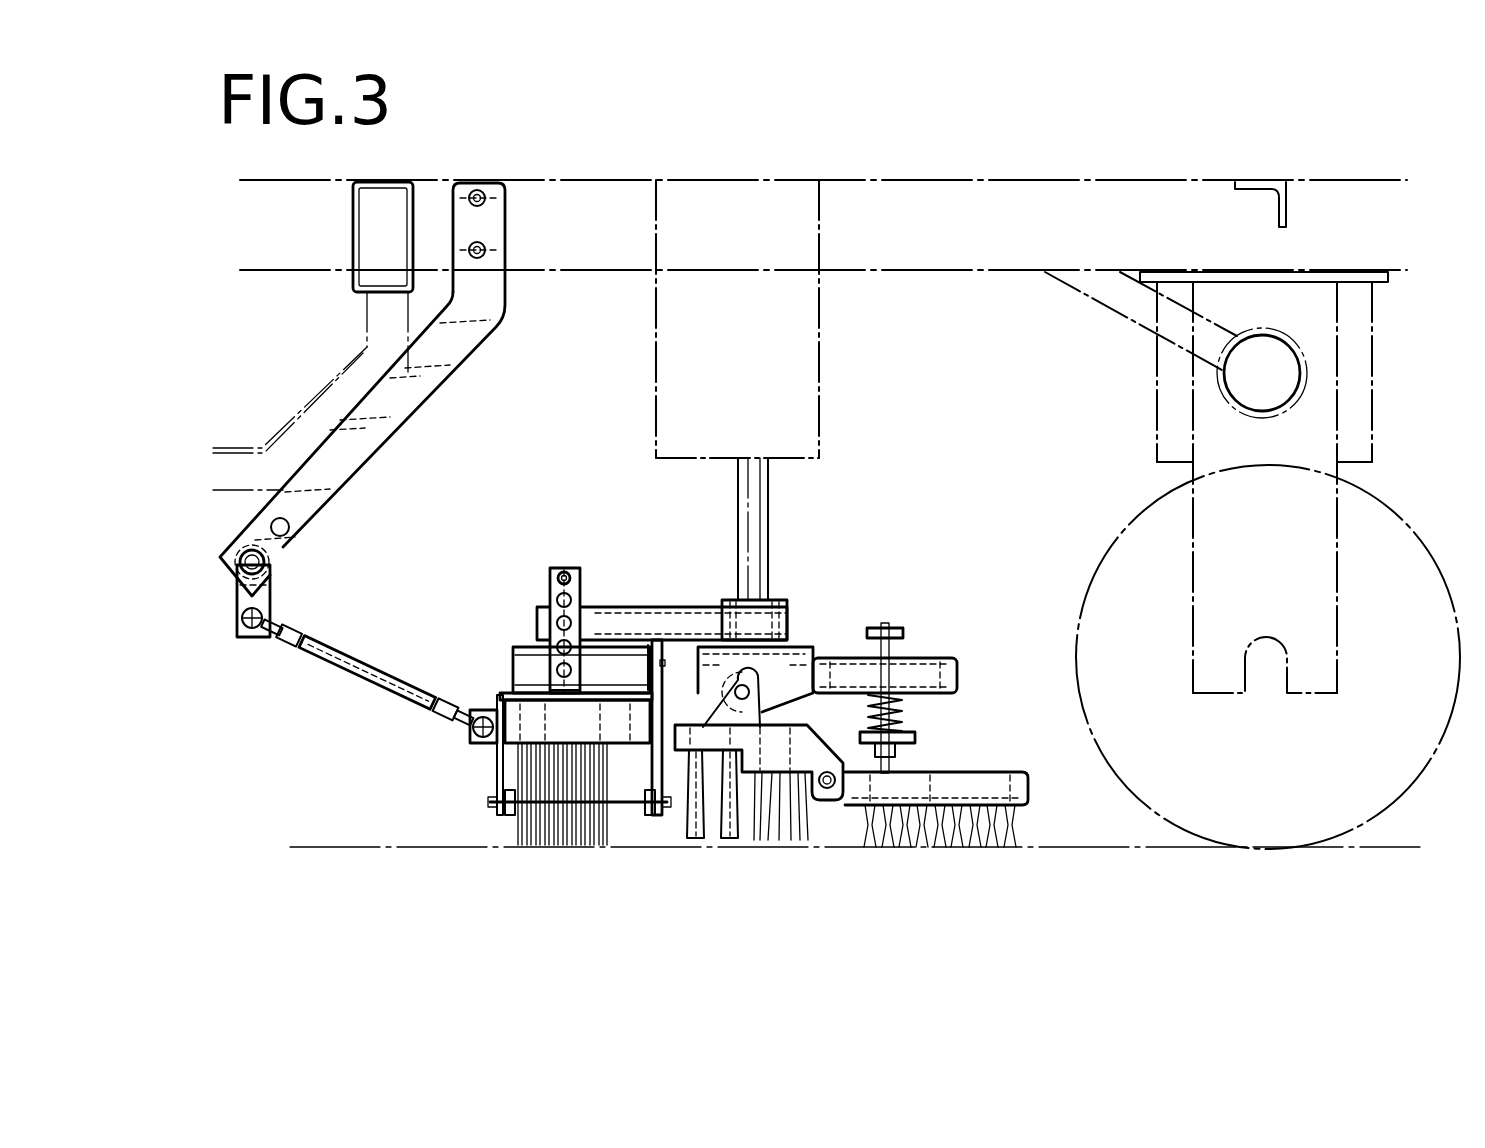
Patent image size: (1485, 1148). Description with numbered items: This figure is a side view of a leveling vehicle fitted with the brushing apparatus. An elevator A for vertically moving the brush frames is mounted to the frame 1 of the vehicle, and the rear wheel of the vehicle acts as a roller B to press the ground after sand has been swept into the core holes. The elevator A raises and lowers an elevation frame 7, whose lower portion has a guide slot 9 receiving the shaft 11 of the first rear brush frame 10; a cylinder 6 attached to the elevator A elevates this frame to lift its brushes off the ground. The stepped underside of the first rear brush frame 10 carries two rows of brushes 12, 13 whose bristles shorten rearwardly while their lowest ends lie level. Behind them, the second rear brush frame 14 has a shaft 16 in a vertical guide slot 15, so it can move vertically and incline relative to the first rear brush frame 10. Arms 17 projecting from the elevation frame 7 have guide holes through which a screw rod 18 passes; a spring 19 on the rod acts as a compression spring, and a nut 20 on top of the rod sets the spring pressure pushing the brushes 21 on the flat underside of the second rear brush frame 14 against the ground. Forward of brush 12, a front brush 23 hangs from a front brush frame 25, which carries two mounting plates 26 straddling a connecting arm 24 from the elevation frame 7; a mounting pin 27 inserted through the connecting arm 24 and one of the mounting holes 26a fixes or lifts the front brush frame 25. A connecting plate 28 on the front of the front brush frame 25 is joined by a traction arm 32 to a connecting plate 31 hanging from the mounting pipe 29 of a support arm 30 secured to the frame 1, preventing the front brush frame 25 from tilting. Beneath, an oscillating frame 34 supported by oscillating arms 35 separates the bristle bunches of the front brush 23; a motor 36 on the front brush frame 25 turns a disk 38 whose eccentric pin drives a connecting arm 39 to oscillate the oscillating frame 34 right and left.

The frame 1 is at (893, 197).
The cylinder 6 is at (770, 508).
The elevation frame 7 is at (792, 650).
The guide slot 9 is at (710, 640).
The first rear brush frame 10 is at (762, 842).
The shaft 11 is at (765, 680).
The brush 12 is at (692, 840).
The brush 13 is at (800, 822).
The second rear brush frame 14 is at (996, 780).
The guide slot 15 is at (843, 745).
The shaft 16 is at (830, 792).
The arm 17 is at (950, 660).
The screw rod 18 is at (902, 640).
The spring 19 is at (915, 720).
The nut 20 is at (893, 624).
The brush 21 is at (942, 846).
The front brush 23 is at (566, 832).
The connecting arm 24 is at (632, 640).
The front brush frame 25 is at (528, 715).
The mounting plate 26 is at (550, 672).
The mounting hole 26a is at (548, 602).
The mounting pin 27 is at (562, 577).
The connecting plate 28 is at (474, 736).
The mounting pipe 29 is at (290, 563).
The support arm 30 is at (503, 345).
The connecting plate 31 is at (240, 606).
The traction arm 32 is at (352, 672).
The oscillating frame 34 is at (640, 817).
The oscillating arm 35 is at (490, 808).
The motor 36 is at (612, 650).
The disk 38 is at (656, 648).
The connecting arm 39 is at (668, 645).
The elevator A is at (820, 374).
The roller B is at (1124, 522).